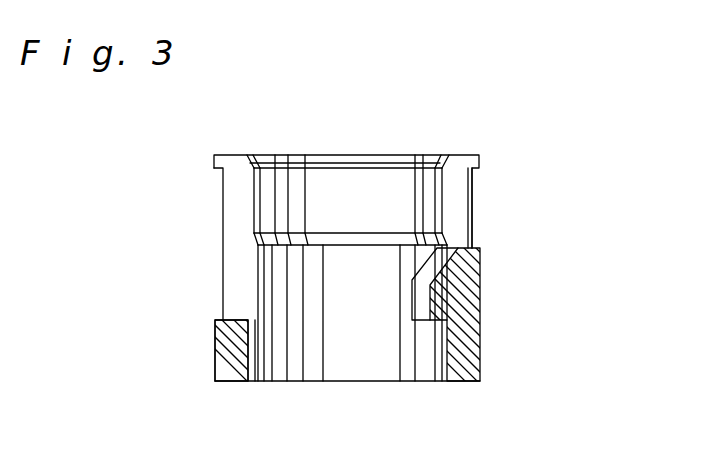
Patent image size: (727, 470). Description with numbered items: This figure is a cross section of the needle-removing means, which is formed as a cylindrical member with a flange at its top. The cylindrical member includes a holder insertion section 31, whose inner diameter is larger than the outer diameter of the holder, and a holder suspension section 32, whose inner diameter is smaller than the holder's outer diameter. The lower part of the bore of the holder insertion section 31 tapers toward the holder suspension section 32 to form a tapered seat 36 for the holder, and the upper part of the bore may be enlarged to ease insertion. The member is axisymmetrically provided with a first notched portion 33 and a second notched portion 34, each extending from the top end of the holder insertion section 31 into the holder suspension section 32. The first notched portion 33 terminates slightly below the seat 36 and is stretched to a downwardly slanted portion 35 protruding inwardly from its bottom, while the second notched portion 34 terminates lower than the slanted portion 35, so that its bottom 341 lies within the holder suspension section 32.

The holder insertion section 31 is at (495, 234).
The holder suspension section 32 is at (207, 237).
The first notched portion 33 is at (470, 207).
The second notched portion 34 is at (222, 224).
The bottom of the second notched portion 341 is at (238, 318).
The downwardly slanted portion 35 is at (425, 277).
The tapered seat 36 is at (375, 240).